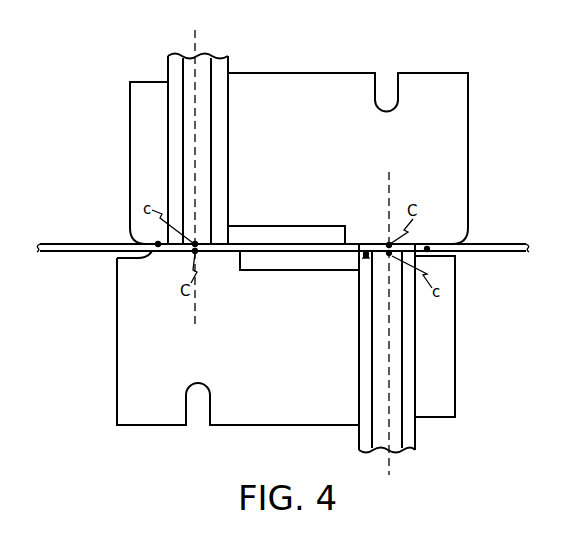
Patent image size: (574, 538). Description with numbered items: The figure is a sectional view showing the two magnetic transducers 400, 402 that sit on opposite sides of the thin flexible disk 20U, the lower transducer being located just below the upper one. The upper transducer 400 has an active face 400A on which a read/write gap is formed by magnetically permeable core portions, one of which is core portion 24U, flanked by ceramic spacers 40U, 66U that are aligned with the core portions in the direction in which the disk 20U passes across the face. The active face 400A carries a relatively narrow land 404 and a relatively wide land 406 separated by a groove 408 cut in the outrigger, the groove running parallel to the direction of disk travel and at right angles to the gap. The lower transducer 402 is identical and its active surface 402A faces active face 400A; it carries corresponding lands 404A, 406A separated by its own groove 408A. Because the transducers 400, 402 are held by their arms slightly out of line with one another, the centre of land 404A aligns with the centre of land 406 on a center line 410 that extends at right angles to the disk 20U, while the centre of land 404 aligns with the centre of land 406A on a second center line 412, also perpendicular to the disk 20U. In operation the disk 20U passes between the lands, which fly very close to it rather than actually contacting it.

The transducer 400 is at (265, 158).
The transducer 402 is at (324, 338).
The magnetically permeable core portion 24U is at (189, 169).
The ceramic spacer 66U is at (141, 142).
The ceramic spacer 40U is at (246, 142).
The disk 20U is at (283, 278).
The center line 410 is at (408, 309).
The groove 408 is at (320, 228).
The groove 408A is at (318, 272).
The active surface 402A is at (158, 244).
The land 406A is at (218, 244).
The land 404A is at (415, 245).
The wide land 406 is at (425, 255).
The active face 400A is at (367, 256).
The narrow land 404 is at (198, 258).
The center line 412 is at (266, 307).